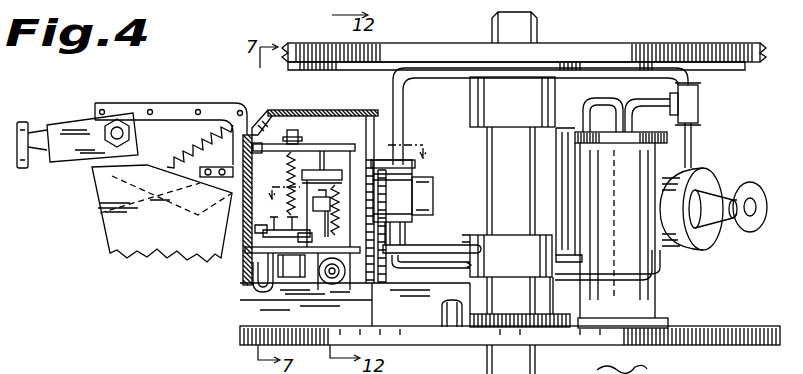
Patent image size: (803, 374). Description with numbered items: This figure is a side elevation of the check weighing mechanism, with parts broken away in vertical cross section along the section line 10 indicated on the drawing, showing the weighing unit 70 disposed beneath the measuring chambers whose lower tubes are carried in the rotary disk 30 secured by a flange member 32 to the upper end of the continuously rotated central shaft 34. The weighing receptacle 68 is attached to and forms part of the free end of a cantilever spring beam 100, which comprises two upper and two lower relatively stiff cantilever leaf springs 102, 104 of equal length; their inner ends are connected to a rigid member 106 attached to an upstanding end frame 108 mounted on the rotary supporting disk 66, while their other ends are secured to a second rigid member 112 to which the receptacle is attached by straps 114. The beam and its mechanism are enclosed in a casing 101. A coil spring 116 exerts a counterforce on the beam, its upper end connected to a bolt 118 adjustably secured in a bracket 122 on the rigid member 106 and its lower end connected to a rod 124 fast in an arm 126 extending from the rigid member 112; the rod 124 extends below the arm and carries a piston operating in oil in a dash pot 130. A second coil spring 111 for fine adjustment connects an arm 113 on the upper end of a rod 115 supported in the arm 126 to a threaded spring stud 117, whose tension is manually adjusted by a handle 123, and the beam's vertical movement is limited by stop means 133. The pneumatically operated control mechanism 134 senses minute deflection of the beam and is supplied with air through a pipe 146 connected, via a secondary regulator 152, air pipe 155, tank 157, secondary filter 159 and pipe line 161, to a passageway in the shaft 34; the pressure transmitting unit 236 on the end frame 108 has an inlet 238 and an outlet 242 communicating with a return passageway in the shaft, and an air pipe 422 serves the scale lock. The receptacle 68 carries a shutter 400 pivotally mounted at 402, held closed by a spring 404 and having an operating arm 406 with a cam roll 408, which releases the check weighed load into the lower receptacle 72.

The section line 10- 10 is at (350, 165).
The rotary disk 30 is at (588, 47).
The flange member 32 is at (548, 90).
The central shaft 34 is at (532, 33).
The rotary supporting disk 66 is at (436, 345).
The weighing receptacle 68 is at (168, 131).
The weighing unit 70 is at (223, 89).
The lower receptacle 72 is at (100, 235).
The cantilever spring beam 100 is at (343, 108).
The casing 101 is at (358, 112).
The upper cantilever leaf springs 102 is at (268, 128).
The lower cantilever leaf springs 104 is at (312, 272).
The rigid member 106 is at (382, 246).
The upstanding end frame 108 is at (342, 148).
The second coil spring 111 is at (405, 224).
The second rigid member 112 is at (658, 373).
The arm 113 is at (322, 172).
The straps 114 is at (265, 108).
The rod 115 is at (308, 315).
The coil spring 116 is at (337, 109).
The threaded spring stud 117 is at (361, 274).
The bolt 118 is at (293, 129).
The bracket 122 is at (325, 143).
The handle 123 is at (342, 272).
The rod 124 is at (257, 274).
The arm 126 is at (245, 238).
The dash pot 130 is at (263, 292).
The stop means 133 is at (242, 271).
The pneumatically operated control mechanism 134 is at (346, 194).
The pipe 146 is at (497, 279).
The secondary regulator 152 is at (708, 243).
The air pipe 155 is at (699, 147).
The tank 157 is at (657, 303).
The secondary filter 159 is at (557, 157).
The pipe line 161 is at (567, 277).
The pressure transmitting unit 236 is at (411, 165).
The inlet 238 is at (486, 261).
The outlet 242 is at (433, 70).
The shutter 400 is at (93, 211).
The pivot 402 is at (115, 128).
The spring 404 is at (200, 141).
The operating arm 406 is at (57, 120).
The cam roll 408 is at (24, 168).
The air pipe 422 is at (450, 240).